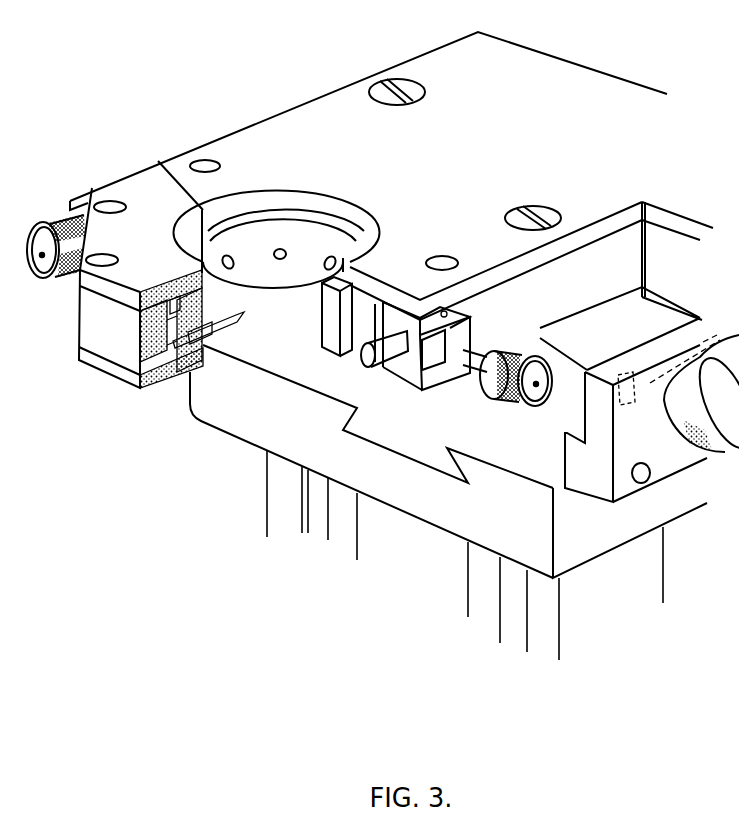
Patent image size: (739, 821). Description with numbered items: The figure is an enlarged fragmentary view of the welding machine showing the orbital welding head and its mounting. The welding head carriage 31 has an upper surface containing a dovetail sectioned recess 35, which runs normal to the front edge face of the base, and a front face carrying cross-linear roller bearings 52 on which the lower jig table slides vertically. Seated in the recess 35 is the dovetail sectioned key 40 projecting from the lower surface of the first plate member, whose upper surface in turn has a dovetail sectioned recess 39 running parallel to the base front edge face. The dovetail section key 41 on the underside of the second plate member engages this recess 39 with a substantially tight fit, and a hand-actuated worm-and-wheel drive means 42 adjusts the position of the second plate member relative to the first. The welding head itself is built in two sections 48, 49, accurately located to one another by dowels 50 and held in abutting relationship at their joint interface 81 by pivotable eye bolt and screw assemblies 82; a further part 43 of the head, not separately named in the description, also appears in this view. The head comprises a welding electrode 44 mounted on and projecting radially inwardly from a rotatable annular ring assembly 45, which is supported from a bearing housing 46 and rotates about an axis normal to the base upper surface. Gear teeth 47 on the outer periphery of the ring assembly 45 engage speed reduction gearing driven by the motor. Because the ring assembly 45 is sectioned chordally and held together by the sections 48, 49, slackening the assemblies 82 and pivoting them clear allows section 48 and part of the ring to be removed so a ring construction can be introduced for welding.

The welding head carriage 31 is at (364, 529).
The dovetail sectioned recess 35 is at (406, 458).
The dovetail sectioned recess 39 is at (636, 410).
The dovetail sectioned key 40 is at (442, 460).
The dovetail section key 41 is at (648, 385).
The second hand-actuated worm-and-wheel drive means 42 is at (707, 457).
The rotary table flange 43 is at (368, 78).
The welding electrode 44 is at (240, 320).
The rotatable annular ring assembly 45 is at (333, 338).
The bearing housing 46 is at (173, 376).
The gear teeth 47 is at (164, 280).
The welding head section 48 is at (130, 190).
The welding head section 49 is at (253, 150).
The dowels 50 is at (374, 362).
The cross-linear roller bearings 52 is at (60, 217).
The joint interface 81 is at (168, 172).
The pivotable eye bolt and screw assemblies 82 is at (502, 398).